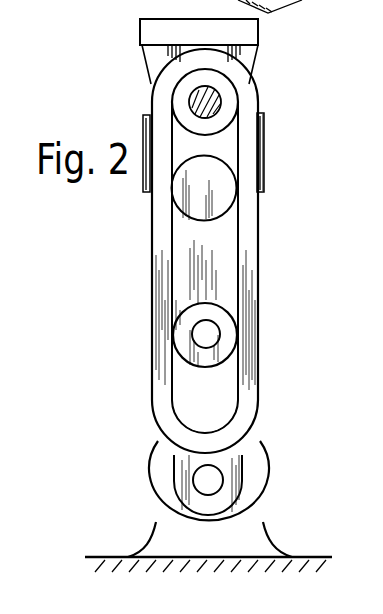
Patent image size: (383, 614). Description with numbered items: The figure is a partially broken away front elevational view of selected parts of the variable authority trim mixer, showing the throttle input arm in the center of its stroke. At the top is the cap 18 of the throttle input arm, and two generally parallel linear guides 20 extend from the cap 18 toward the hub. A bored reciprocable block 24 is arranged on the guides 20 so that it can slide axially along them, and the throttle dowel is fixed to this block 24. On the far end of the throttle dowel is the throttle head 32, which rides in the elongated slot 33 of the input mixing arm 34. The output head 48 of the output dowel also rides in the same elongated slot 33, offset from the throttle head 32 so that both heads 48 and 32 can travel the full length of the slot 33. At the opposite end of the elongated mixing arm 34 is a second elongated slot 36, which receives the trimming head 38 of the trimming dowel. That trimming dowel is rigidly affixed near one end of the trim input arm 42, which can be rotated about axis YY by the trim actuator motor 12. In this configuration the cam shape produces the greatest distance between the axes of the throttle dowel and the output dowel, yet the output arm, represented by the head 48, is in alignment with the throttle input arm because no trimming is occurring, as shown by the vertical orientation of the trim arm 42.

The trim actuator motor 12 is at (160, 490).
The cap 18 is at (147, 24).
The linear guides 20 is at (163, 64).
The bored reciprocable block 24 is at (260, 153).
The throttle head 32 is at (178, 190).
The elongated slot 33 is at (245, 152).
The input mixing arm 34 is at (255, 251).
The second elongated slot 36 is at (183, 406).
The trimming head 38 is at (185, 320).
The trim input arm 42 is at (233, 463).
The output head 48 is at (227, 95).